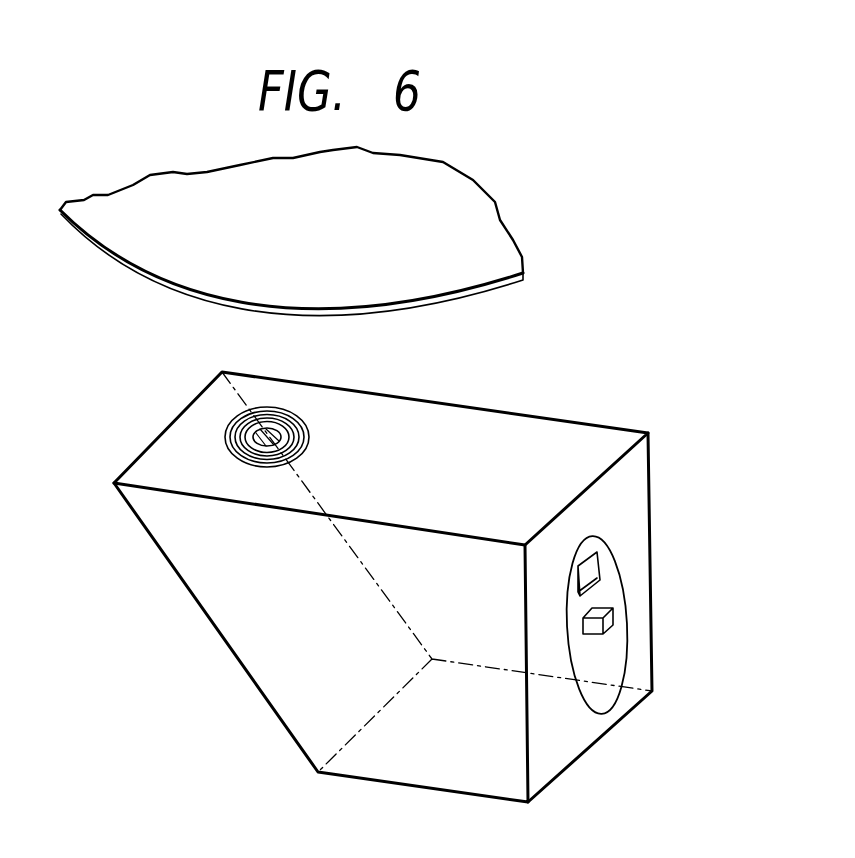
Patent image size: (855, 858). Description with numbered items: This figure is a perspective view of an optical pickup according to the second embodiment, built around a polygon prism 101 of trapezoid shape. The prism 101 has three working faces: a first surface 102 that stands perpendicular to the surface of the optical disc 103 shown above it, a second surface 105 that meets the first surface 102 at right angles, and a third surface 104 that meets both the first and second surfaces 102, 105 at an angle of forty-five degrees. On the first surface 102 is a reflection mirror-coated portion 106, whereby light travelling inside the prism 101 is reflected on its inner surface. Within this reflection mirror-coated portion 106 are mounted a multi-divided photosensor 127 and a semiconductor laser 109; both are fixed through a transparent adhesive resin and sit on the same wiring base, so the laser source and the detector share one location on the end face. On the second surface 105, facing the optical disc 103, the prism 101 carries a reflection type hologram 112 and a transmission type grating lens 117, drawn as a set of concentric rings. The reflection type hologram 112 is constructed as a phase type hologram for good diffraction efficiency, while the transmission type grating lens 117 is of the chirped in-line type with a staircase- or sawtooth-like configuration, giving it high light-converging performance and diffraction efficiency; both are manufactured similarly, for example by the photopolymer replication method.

The polygon prism 101 is at (416, 558).
The first surface 102 is at (628, 472).
The optical disc 103 is at (483, 244).
The third surface 104 is at (222, 641).
The second surface 105 is at (557, 440).
The reflection mirror-coated portion 106 is at (625, 666).
The semiconductor laser 109 is at (605, 625).
The reflection type hologram 112 is at (262, 430).
The transmission type grating lens 117 is at (291, 408).
The multi-divided photosensor 127 is at (595, 575).